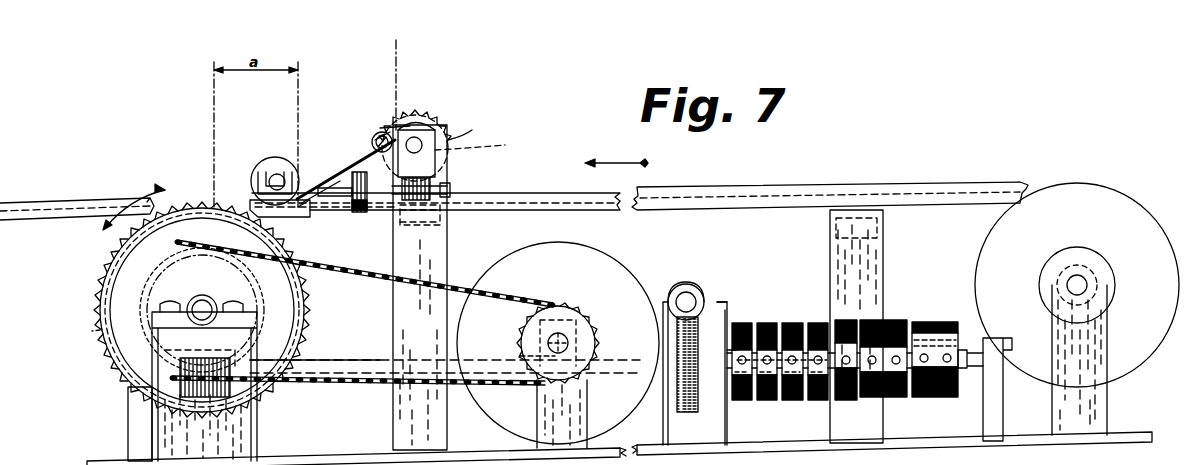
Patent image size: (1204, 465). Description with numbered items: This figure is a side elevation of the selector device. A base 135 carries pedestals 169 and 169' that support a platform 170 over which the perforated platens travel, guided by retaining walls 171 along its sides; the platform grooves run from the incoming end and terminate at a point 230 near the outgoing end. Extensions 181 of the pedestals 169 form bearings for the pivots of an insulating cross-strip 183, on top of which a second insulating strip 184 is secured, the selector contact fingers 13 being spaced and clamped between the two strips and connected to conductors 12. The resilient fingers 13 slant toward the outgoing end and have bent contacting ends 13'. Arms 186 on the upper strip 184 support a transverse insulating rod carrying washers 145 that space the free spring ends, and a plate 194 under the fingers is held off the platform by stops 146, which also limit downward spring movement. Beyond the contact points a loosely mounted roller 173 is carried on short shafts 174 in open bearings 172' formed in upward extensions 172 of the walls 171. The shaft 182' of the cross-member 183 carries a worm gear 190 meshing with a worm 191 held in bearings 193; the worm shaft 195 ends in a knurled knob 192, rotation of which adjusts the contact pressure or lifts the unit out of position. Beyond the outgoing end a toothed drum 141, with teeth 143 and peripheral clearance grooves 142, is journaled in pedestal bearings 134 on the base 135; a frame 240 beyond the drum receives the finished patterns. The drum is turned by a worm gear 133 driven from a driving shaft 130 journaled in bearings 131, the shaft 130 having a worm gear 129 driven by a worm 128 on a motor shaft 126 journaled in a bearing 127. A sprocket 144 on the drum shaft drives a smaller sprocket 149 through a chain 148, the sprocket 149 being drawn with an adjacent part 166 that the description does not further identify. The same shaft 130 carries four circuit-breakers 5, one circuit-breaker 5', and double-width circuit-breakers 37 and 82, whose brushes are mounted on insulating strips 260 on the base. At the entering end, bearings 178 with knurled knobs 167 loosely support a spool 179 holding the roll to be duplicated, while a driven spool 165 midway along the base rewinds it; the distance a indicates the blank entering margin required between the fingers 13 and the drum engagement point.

The circuit-breaker 5 is at (780, 342).
The circuit-breaker 5' is at (837, 376).
The conductors 12 is at (454, 140).
The selector contact fingers 13 is at (346, 160).
The contacting ends 13' is at (314, 173).
The circuit-breaker 37 is at (866, 404).
The circuit-breaker 82 is at (944, 404).
The motor shaft 126 is at (696, 300).
The bearing 127 is at (712, 302).
The worm 128 is at (676, 276).
The worm gear 129 is at (734, 422).
The driving shaft 130 is at (308, 365).
The bearings 131 is at (128, 416).
The worm gear 133 is at (160, 359).
The pedestal bearings 134 is at (259, 416).
The base 135 is at (300, 461).
The toothed drum 141 is at (100, 306).
The peripheral clearance grooves 142 is at (100, 332).
The teeth 143 is at (102, 267).
The sprocket 144 is at (308, 316).
The insulating washers 145 is at (350, 142).
The stops 146 is at (318, 208).
The chain 148 is at (357, 264).
The sprocket 149 is at (519, 330).
The second spool 165 is at (592, 259).
The sprocket teeth 166 is at (588, 306).
The knurled knobs 167 is at (595, 326).
The pedestals 169 is at (447, 287).
The pedestals 169' is at (888, 326).
The platform 170 is at (714, 192).
The retaining walls 171 is at (790, 187).
The upward extensions 172 is at (261, 174).
The open bearings 172' is at (244, 190).
The roller 173 is at (266, 172).
The projecting shafts 174 is at (280, 177).
The bearings 178 is at (1104, 407).
The spool 179 is at (1111, 208).
The extensions 181 is at (506, 143).
The shaft 182' is at (415, 128).
The insulating cross-strip 183 is at (435, 146).
The second insulating strip 184 is at (419, 141).
The arms 186 is at (375, 136).
The worm gear 190 is at (412, 115).
The worm 191 is at (460, 204).
The knurled knob 192 is at (360, 211).
The bearings 193 is at (431, 180).
The plate 194 is at (328, 206).
The shaft 195 is at (448, 189).
The point 230 is at (396, 75).
The frame 240 is at (60, 206).
The strips 260 is at (969, 320).